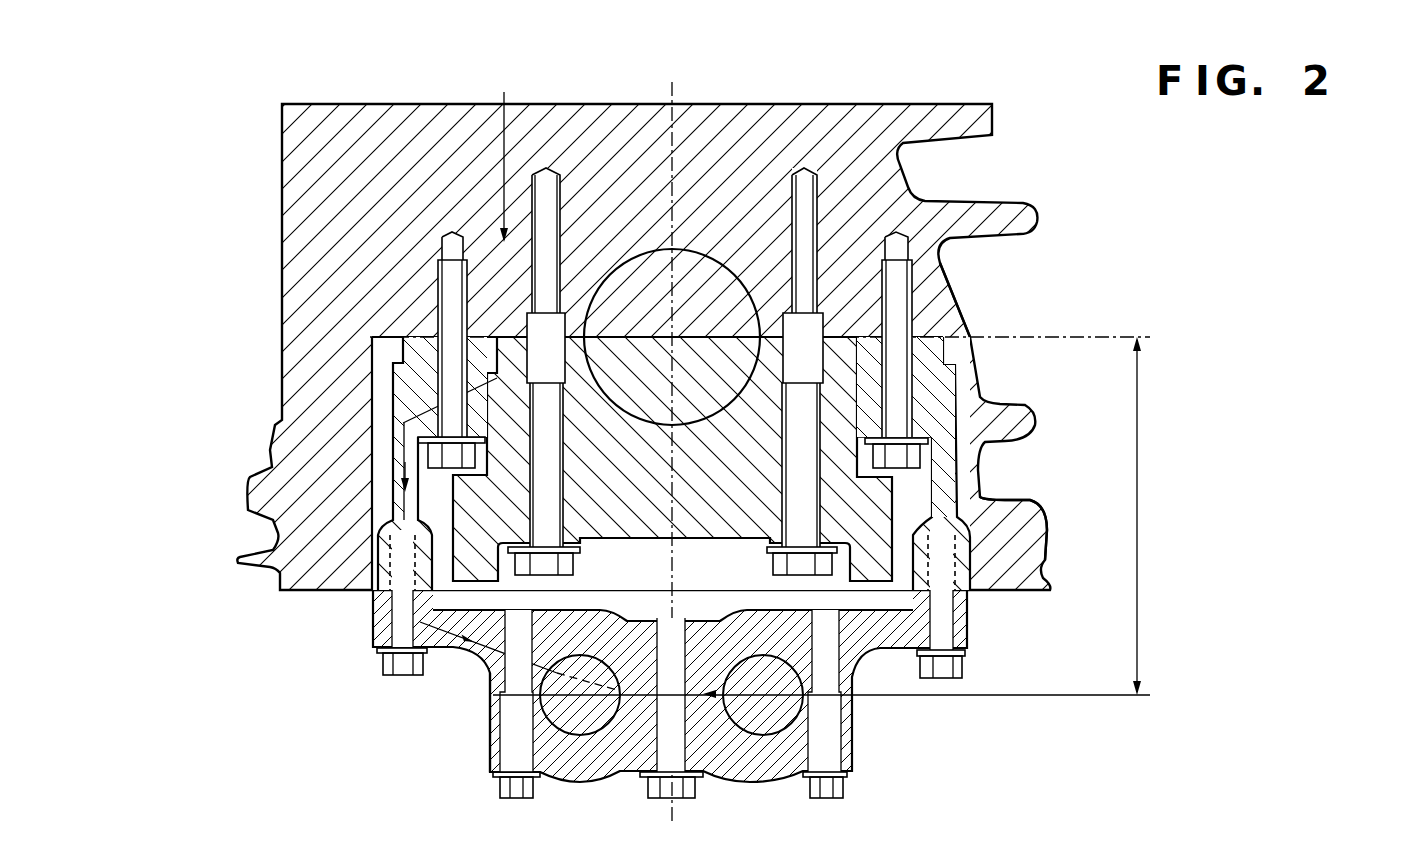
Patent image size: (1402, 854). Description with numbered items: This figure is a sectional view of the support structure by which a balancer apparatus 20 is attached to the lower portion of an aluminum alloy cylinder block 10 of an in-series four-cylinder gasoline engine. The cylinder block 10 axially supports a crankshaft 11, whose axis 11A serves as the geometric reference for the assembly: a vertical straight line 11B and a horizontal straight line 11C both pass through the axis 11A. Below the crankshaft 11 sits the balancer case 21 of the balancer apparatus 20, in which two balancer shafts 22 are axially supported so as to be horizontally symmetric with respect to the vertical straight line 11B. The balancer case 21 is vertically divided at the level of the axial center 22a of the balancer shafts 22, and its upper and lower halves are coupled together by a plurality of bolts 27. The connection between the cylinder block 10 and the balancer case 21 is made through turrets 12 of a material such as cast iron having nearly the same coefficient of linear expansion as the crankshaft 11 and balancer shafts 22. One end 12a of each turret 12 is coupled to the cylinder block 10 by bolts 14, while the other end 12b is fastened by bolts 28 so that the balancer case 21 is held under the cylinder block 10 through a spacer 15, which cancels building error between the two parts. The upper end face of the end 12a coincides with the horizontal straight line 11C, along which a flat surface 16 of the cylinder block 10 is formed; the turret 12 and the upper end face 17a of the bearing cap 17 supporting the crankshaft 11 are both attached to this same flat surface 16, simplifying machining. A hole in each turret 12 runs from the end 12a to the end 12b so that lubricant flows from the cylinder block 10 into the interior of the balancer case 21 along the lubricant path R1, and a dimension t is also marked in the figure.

The cylinder block 10 is at (998, 116).
The crankshaft 11 is at (700, 252).
The axis of the crankshaft 11A is at (678, 345).
The vertical straight line 11B is at (683, 90).
The horizontal straight line 11C is at (1063, 335).
The turret 12 is at (960, 390).
The one end of the turret 12a is at (957, 315).
The other end of the turret 12b is at (960, 566).
The bolt 14 is at (432, 455).
The spacer 15 is at (378, 592).
The flat surface 16 is at (851, 337).
The bearing cap 17 is at (895, 500).
The upper end face of the bearing cap 17a is at (985, 354).
The balancer apparatus 20 is at (858, 756).
The balancer case 21 is at (492, 727).
The balancer shaft 22 is at (555, 717).
The axial center of the balancer shafts 22a is at (490, 695).
The bolt 27 is at (514, 790).
The bolt 28 is at (382, 665).
The lubricant path R1 is at (506, 92).
The thickness dimension t is at (821, 516).